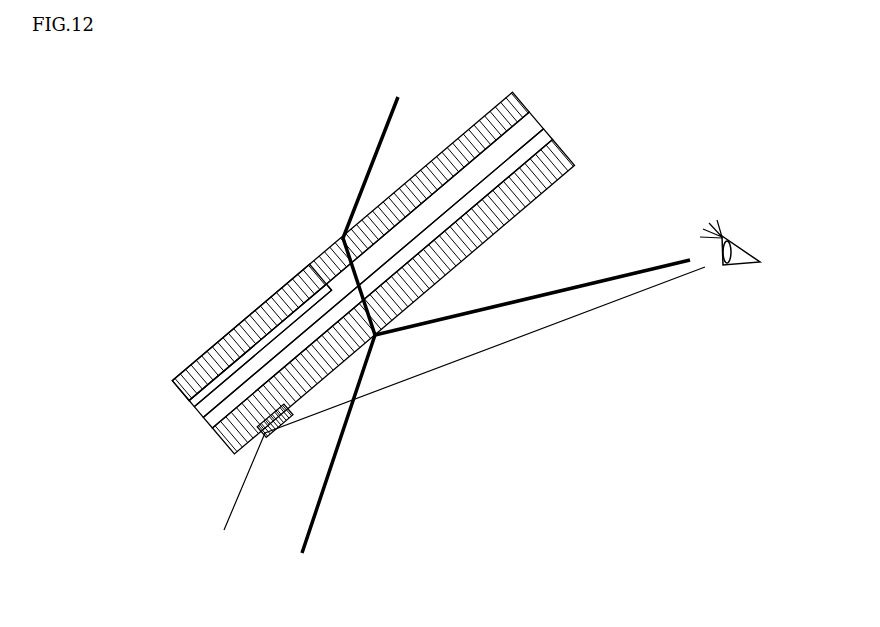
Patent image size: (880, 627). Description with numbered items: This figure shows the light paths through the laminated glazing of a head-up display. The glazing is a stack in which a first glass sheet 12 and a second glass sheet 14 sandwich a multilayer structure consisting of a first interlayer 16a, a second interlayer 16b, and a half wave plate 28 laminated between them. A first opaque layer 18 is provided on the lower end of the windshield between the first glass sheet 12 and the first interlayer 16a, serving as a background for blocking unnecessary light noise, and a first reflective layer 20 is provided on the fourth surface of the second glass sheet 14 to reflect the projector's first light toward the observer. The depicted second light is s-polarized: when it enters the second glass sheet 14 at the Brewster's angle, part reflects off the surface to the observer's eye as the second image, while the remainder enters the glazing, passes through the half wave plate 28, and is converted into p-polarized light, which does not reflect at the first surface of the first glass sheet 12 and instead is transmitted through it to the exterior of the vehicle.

The first glass sheet 12 is at (487, 133).
The second glass sheet 14 is at (527, 190).
The first interlayer 16a is at (528, 118).
The second interlayer 16b is at (545, 135).
The first opaque layer 18 is at (232, 336).
The first reflective layer 20 is at (262, 432).
The half wave plate 28 is at (318, 279).